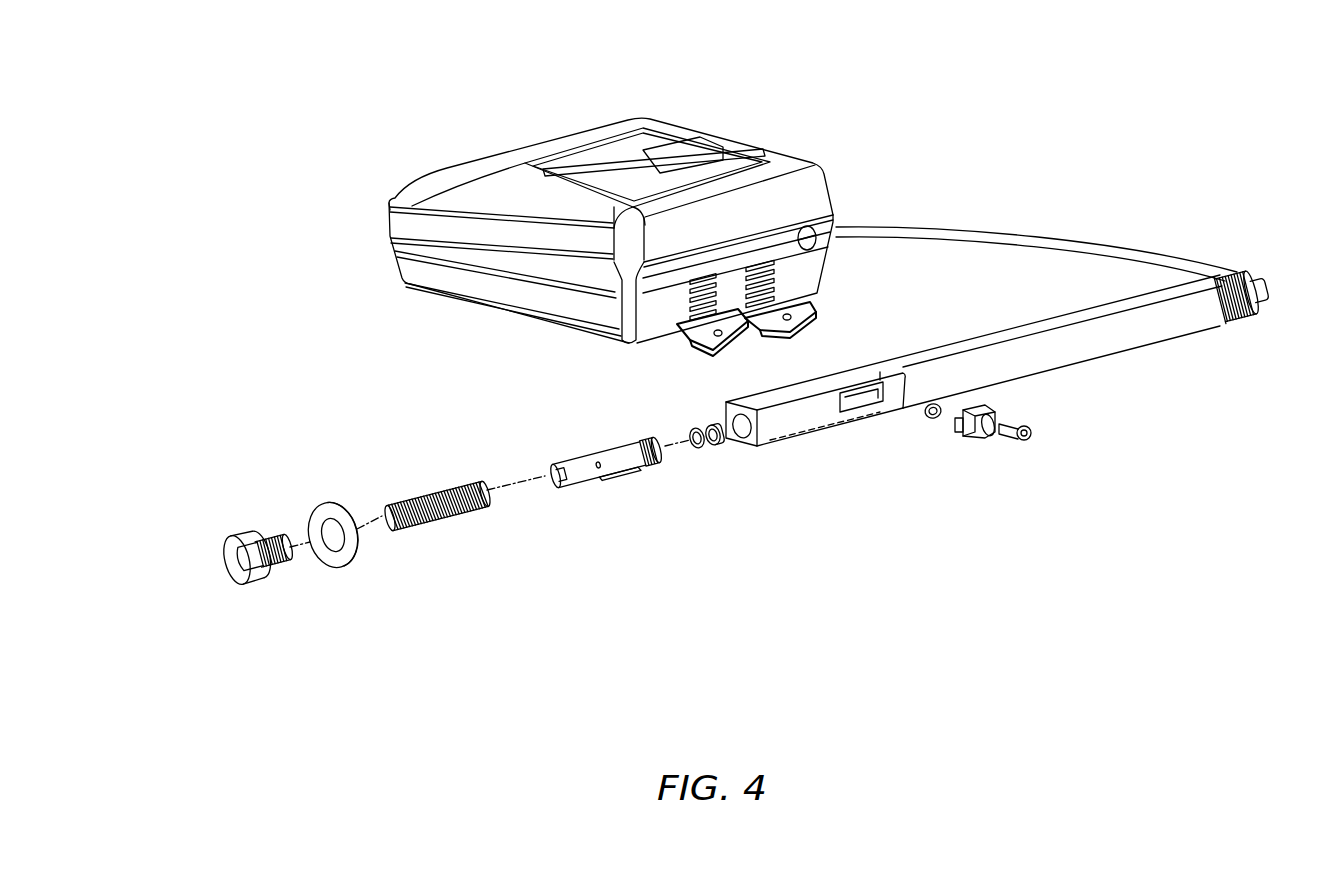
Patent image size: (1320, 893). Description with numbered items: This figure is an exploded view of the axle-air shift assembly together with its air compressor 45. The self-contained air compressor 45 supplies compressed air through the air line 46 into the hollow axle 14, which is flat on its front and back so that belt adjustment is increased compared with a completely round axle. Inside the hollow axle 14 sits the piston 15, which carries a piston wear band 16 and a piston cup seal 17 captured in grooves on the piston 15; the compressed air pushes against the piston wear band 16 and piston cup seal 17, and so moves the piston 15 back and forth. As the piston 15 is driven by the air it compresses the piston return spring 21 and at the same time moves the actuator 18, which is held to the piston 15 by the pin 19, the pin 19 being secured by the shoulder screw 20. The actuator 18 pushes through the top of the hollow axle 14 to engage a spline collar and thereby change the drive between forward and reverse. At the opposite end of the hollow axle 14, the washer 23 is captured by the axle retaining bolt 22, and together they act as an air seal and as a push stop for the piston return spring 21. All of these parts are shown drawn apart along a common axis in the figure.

The hollow axle 14 is at (999, 373).
The piston 15 is at (578, 532).
The piston wear band 16 is at (676, 514).
The piston cup seal 17 is at (813, 475).
The actuator 18 is at (999, 471).
The pin 19 is at (898, 484).
The shoulder screw 20 is at (1068, 471).
The piston return spring 21 is at (435, 569).
The axle retaining bolt 22 is at (217, 618).
The washer 23 is at (306, 592).
The air compressor 45 is at (611, 178).
The air line 46 is at (1036, 186).